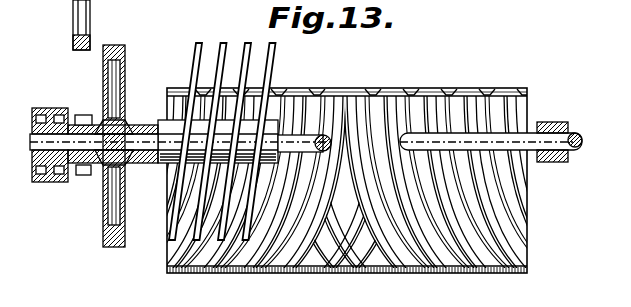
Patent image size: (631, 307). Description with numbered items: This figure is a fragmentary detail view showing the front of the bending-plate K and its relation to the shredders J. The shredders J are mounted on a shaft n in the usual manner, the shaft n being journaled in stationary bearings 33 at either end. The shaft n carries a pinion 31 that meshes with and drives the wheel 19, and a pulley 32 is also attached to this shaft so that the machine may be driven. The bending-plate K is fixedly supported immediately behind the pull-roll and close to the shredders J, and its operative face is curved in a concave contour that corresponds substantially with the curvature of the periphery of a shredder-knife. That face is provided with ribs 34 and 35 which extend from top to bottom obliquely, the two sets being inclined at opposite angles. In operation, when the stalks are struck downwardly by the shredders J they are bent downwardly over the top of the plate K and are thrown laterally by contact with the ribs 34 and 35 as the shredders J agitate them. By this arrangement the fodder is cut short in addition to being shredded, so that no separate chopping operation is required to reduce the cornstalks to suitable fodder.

The wheel 19 is at (92, 9).
The shaft n is at (140, 141).
The shredders J is at (277, 53).
The bending-plate K is at (368, 88).
The pinion 31 is at (84, 177).
The pulley 32 is at (49, 183).
The stationary bearings 33 is at (149, 166).
The ribs 34 is at (256, 273).
The ribs 35 is at (437, 273).